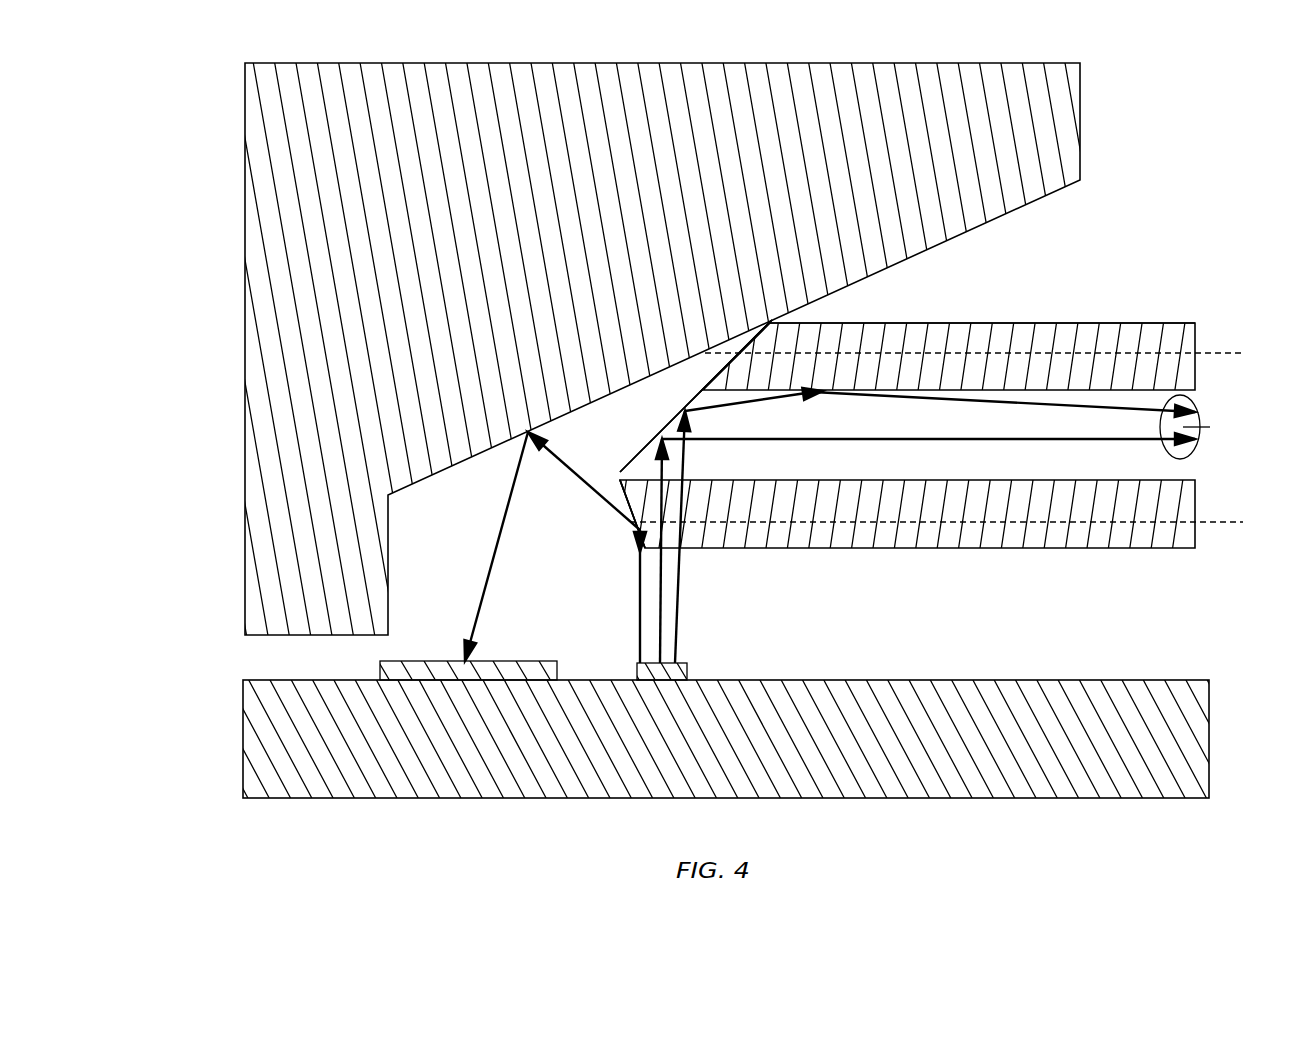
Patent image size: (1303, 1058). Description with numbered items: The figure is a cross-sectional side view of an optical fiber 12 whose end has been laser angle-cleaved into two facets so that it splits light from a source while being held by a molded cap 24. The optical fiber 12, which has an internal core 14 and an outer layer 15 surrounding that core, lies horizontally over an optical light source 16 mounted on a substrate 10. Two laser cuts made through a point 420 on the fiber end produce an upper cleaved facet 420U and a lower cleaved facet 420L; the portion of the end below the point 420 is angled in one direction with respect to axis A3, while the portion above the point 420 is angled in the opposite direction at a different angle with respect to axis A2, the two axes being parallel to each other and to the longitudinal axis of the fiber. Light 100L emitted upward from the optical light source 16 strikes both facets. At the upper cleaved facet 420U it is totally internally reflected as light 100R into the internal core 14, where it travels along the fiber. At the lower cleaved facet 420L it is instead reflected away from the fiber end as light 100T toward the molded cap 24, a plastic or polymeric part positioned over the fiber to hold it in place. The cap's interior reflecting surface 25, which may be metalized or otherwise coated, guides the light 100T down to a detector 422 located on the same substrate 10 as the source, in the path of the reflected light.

The substrate 10 is at (1027, 680).
The optical fiber 12 is at (1182, 548).
The internal core 14 is at (1117, 400).
The upper surface of optical layer 15 is at (1138, 350).
The optical light source 16 is at (688, 662).
The molded cap 24 is at (253, 130).
The interior reflecting surface 25 is at (678, 370).
The point 420 is at (633, 507).
The upper cleaved facet 420U is at (732, 360).
The lower cleaved facet 420L is at (620, 512).
The detector 422 is at (380, 672).
The light 100T is at (576, 466).
The light 100L is at (682, 604).
The light 100R is at (1198, 436).
The axis A2 is at (990, 355).
The axis A3 is at (952, 524).